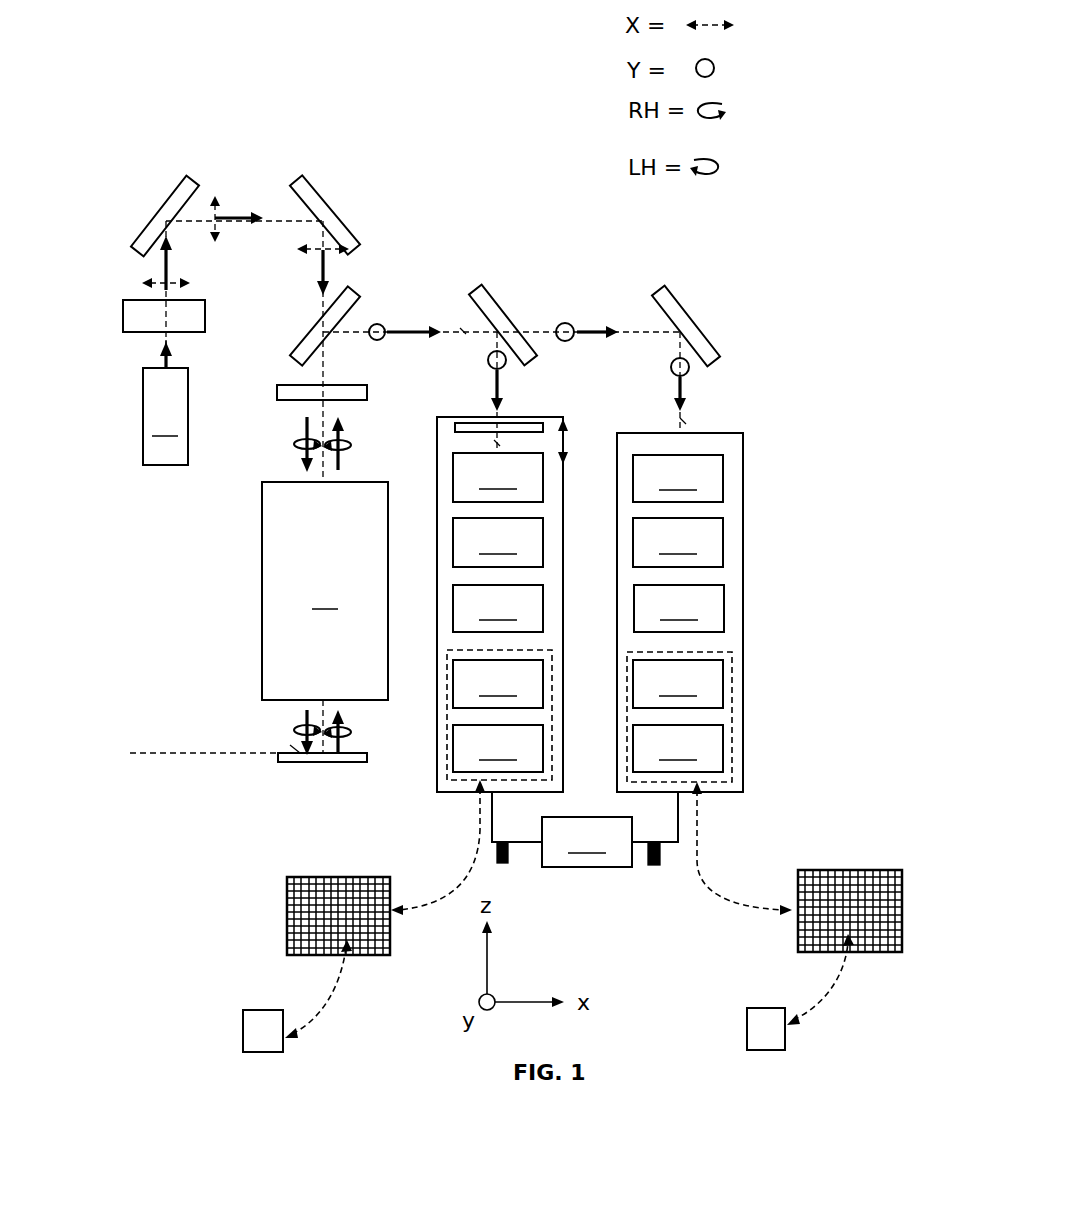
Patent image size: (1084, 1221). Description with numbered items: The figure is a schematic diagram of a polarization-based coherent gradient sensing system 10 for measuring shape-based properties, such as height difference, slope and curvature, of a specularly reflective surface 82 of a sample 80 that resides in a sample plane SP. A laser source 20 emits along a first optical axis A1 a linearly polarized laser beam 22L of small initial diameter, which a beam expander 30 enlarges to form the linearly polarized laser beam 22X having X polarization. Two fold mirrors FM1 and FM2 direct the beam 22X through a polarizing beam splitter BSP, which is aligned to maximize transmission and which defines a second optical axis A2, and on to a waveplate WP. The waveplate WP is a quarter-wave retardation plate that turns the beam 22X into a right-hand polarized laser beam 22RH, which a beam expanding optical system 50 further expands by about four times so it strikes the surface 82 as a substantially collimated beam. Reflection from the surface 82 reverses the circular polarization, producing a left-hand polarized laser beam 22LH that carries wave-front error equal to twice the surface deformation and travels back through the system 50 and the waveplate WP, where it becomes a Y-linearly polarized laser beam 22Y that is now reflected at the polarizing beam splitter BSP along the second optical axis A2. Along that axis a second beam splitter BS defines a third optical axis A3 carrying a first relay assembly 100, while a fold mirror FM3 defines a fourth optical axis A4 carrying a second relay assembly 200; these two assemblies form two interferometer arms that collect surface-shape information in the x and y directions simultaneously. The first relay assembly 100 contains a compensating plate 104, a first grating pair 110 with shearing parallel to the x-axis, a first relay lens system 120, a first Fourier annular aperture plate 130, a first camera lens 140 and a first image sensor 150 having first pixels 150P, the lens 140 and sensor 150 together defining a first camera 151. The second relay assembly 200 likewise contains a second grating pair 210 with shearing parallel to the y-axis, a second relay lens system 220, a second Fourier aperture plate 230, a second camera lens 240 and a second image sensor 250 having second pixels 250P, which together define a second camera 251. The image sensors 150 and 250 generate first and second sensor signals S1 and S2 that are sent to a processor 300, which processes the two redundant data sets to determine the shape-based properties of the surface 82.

The polarization-based CGS system 10 is at (245, 124).
The fold mirror FM1 is at (147, 221).
The fold mirror FM2 is at (343, 187).
The fold mirror FM3 is at (695, 318).
The polarizing beam splitter BSP is at (356, 292).
The second beam splitter BS is at (500, 308).
The waveplate WP is at (352, 385).
The linearly polarized laser beam 22X is at (168, 258).
The linearly polarized laser beam 22Y is at (400, 330).
The linearly polarized laser beam 22L is at (163, 366).
The right-hand polarized laser beam 22RH is at (300, 447).
The left-hand polarized laser beam 22LH is at (345, 452).
The first optical axis A1 is at (163, 342).
The second optical axis A2 is at (463, 332).
The third optical axis A3 is at (497, 443).
The fourth optical axis A4 is at (683, 422).
The laser source 20 is at (165, 416).
The beam expander 30 is at (205, 316).
The beam expanding optical system 50 is at (325, 591).
The sample 80 is at (278, 758).
The surface 82 is at (290, 752).
The sample plane SP is at (183, 754).
The first relay assembly 100 is at (540, 417).
The compensating plate 104 is at (568, 427).
The first grating pair 110 is at (498, 477).
The first relay lens system 120 is at (498, 542).
The first Fourier annular aperture plate 130 is at (498, 608).
The first camera lens 140 is at (498, 684).
The first image sensor 150 is at (297, 877).
The first camera 151 is at (553, 692).
The second relay assembly 200 is at (720, 433).
The second grating pair 210 is at (678, 478).
The second relay lens system 220 is at (678, 542).
The second Fourier aperture plate 230 is at (679, 608).
The second camera lens 240 is at (678, 684).
The second image sensor 250 is at (835, 872).
The second camera 251 is at (733, 714).
The processor 300 is at (585, 829).
The first sensor signal S1 is at (506, 863).
The second sensor signal S2 is at (657, 865).
The first pixels 150P is at (257, 1010).
The second pixels 250P is at (765, 1008).